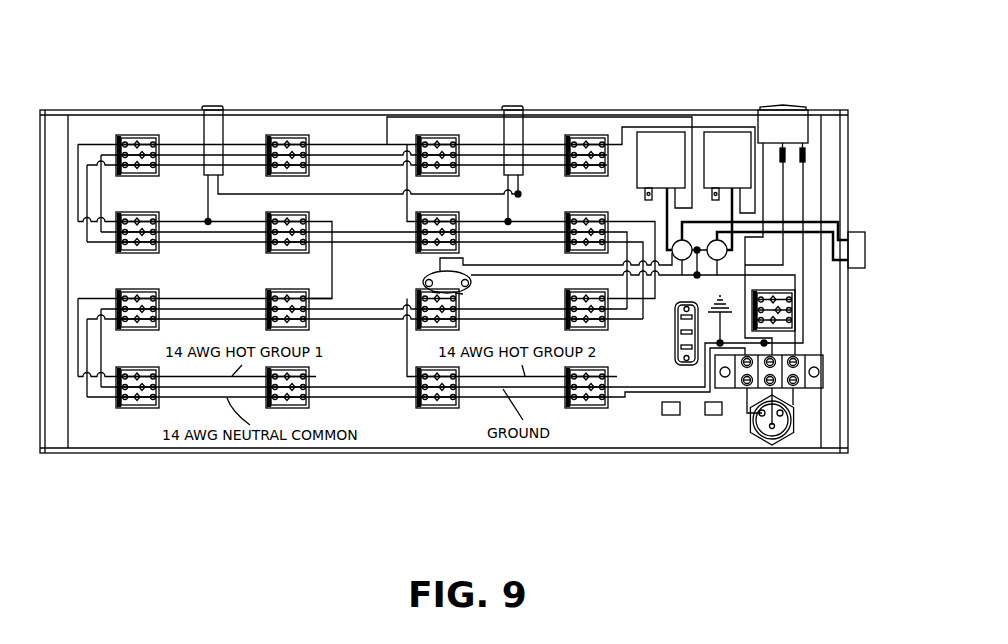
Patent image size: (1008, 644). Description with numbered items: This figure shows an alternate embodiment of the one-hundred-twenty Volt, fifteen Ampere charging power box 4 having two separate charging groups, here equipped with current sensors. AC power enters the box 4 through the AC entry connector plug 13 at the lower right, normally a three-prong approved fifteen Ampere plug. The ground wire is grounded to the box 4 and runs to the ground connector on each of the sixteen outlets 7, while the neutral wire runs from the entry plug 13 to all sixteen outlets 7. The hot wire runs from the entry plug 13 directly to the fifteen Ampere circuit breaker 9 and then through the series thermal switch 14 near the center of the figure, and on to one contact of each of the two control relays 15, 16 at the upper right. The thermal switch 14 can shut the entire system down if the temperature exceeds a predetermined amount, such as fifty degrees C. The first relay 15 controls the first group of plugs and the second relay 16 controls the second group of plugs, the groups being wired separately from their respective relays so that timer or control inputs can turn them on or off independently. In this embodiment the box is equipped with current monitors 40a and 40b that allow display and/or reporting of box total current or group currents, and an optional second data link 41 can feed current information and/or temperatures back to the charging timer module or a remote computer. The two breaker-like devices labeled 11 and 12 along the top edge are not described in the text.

The charging power box 4 is at (108, 120).
The outlet 7 is at (147, 137).
The circuit breaker 9 is at (780, 118).
The circuit breaker 11 is at (212, 105).
The circuit breaker 12 is at (515, 108).
The AC entry connector plug 13 is at (760, 440).
The thermal switch 14 is at (445, 281).
The first relay 15 is at (661, 191).
The second relay 16 is at (727, 191).
The current monitor 40a is at (684, 258).
The current monitor 40b is at (720, 258).
The second data link 41 is at (860, 248).